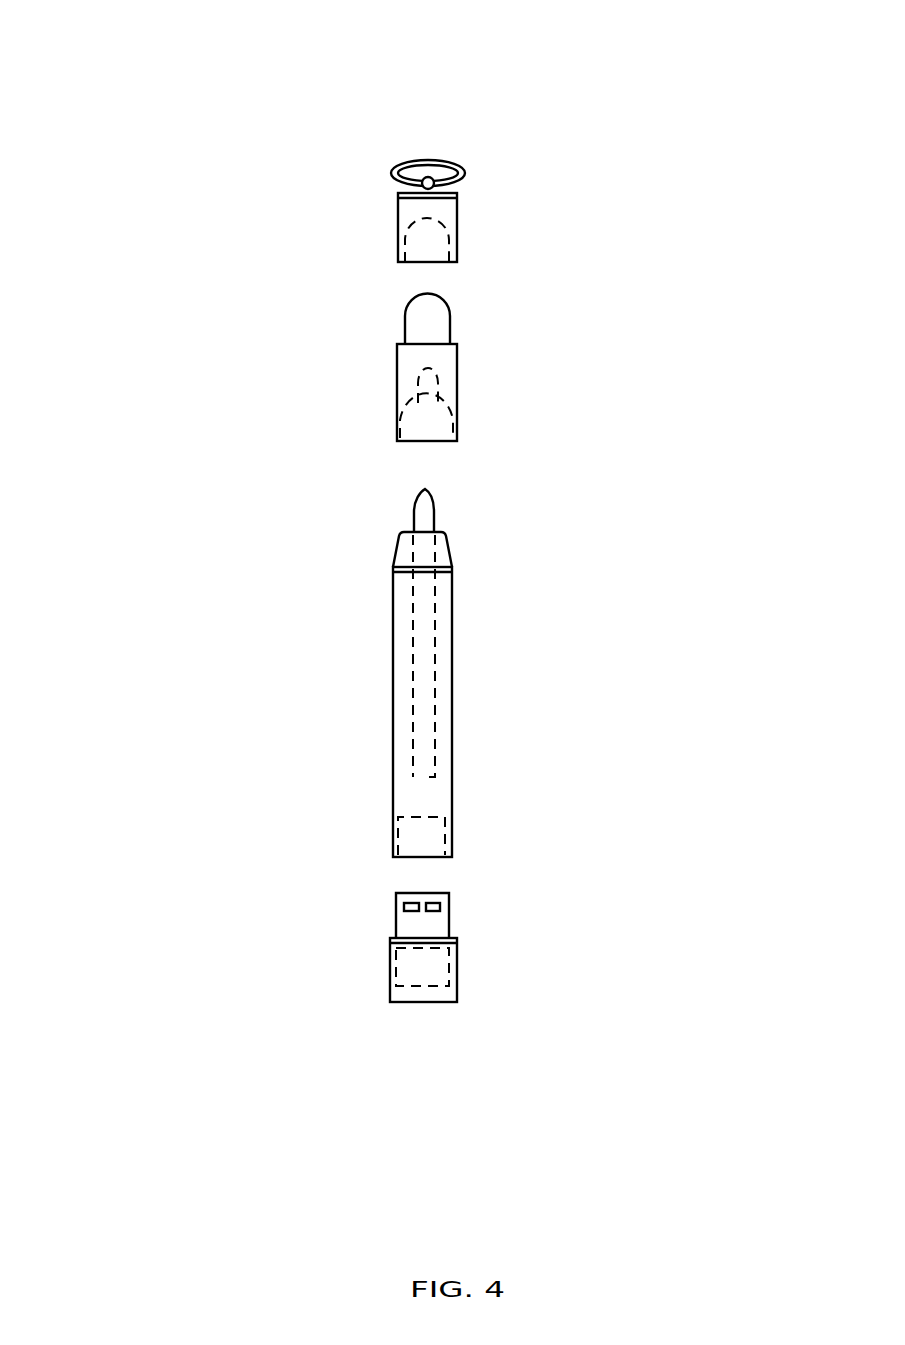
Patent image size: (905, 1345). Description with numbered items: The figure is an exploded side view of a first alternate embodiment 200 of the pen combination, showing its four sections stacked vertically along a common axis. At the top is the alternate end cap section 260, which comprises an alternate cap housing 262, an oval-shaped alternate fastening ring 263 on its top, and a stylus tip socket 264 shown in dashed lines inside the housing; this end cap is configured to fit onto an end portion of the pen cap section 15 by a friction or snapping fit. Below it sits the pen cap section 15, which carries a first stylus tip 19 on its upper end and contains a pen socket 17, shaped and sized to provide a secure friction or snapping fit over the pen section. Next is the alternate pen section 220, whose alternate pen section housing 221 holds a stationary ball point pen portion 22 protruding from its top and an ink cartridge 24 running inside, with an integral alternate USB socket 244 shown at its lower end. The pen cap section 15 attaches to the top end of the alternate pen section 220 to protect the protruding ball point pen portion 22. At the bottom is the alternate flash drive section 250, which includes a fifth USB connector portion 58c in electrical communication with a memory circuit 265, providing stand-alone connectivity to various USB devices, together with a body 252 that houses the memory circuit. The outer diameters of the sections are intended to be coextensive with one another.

The alternate embodiment 200 is at (128, 173).
The alternate end cap section 260 is at (398, 217).
The alternate fastening ring 263 is at (464, 170).
The alternate cap housing 262 is at (458, 207).
The stylus tip socket 264 is at (403, 235).
The pen cap section 15 is at (396, 414).
The first stylus tip 19 is at (404, 318).
The pen socket 17 is at (448, 408).
The alternate pen section 220 is at (396, 741).
The ball point pen portion 22 is at (436, 505).
The alternate pen section housing 221 is at (453, 612).
The ink cartridge 24 is at (436, 655).
The alternate USB socket 244 is at (403, 828).
The alternate flash drive section 250 is at (389, 993).
The fifth USB connector portion 58c is at (396, 905).
The memory circuit 265 is at (449, 967).
The base body 252 is at (458, 985).